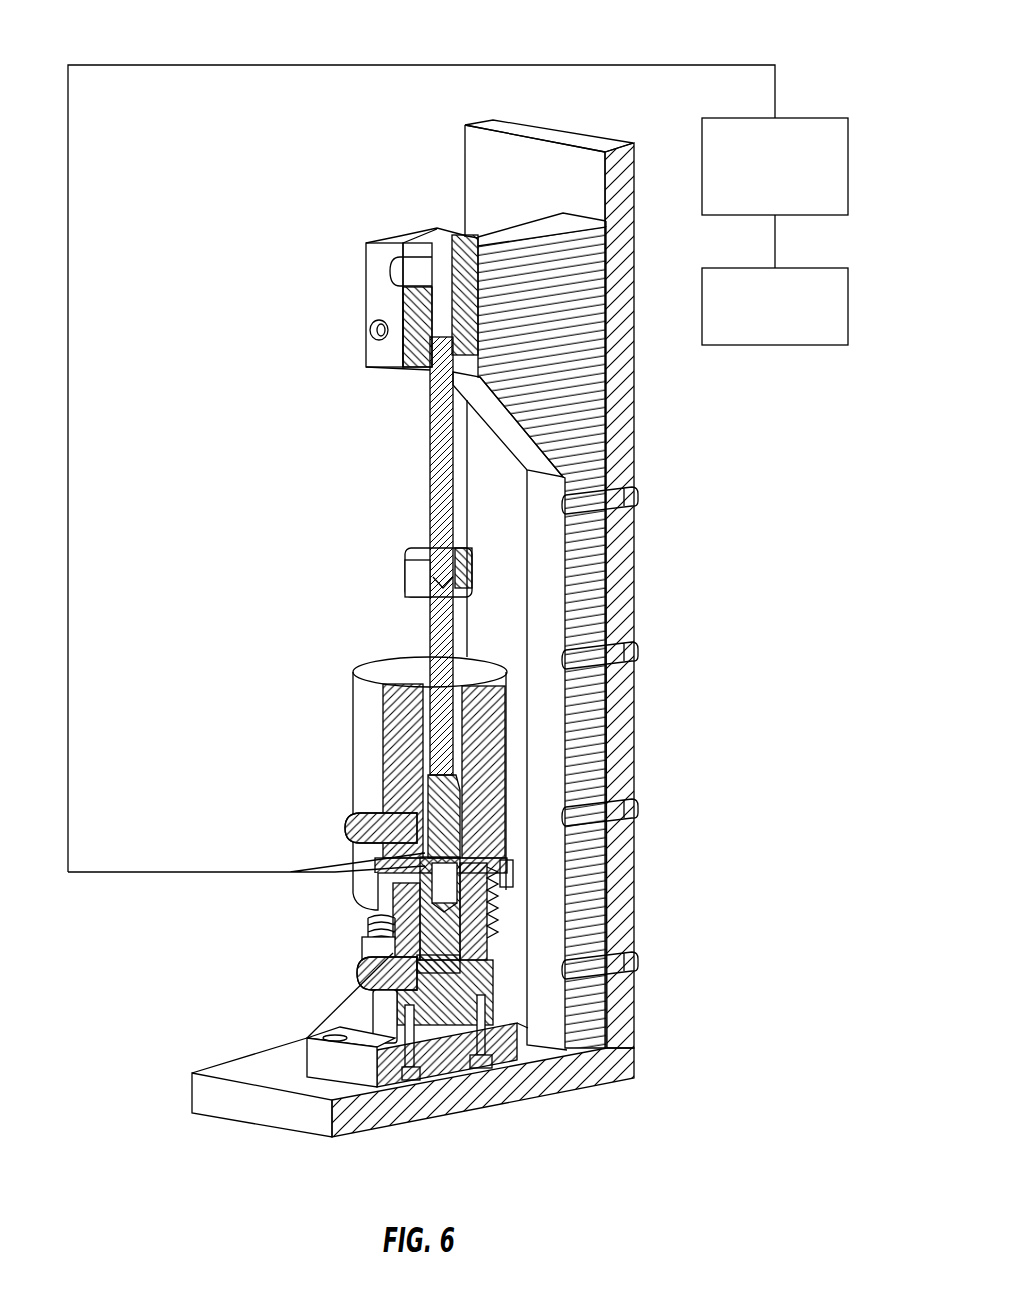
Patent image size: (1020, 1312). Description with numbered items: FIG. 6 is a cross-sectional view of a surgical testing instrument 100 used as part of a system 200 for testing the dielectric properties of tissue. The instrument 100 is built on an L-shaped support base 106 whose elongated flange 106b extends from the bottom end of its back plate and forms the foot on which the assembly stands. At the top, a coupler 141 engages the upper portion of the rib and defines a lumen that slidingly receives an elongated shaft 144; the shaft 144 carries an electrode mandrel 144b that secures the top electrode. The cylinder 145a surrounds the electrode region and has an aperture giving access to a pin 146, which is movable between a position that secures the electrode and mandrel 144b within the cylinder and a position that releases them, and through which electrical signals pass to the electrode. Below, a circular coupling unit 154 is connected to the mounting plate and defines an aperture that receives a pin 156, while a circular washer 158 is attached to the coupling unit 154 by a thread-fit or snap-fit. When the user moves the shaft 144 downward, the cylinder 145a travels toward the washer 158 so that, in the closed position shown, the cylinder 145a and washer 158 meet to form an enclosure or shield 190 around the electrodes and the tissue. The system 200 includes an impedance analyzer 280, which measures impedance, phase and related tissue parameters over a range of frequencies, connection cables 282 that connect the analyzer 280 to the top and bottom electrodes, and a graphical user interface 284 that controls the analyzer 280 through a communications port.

The surgical testing instrument 100 is at (233, 433).
The L-shaped support base 106 is at (567, 127).
The elongated flange 106b is at (478, 1097).
The coupler 141 is at (388, 243).
The elongated shaft 144 is at (415, 440).
The electrode mandrel 144b is at (430, 635).
The cylinder 145a is at (367, 752).
The pin 146 is at (350, 830).
The circular coupling unit 154 is at (380, 1020).
The pin 156 is at (350, 973).
The circular washer 158 is at (355, 893).
The enclosure or shield 190 is at (494, 813).
The system 200 is at (775, 176).
The impedance analyzer 280 is at (753, 207).
The connection cables 282 is at (656, 63).
The graphical user interface 284 is at (753, 334).